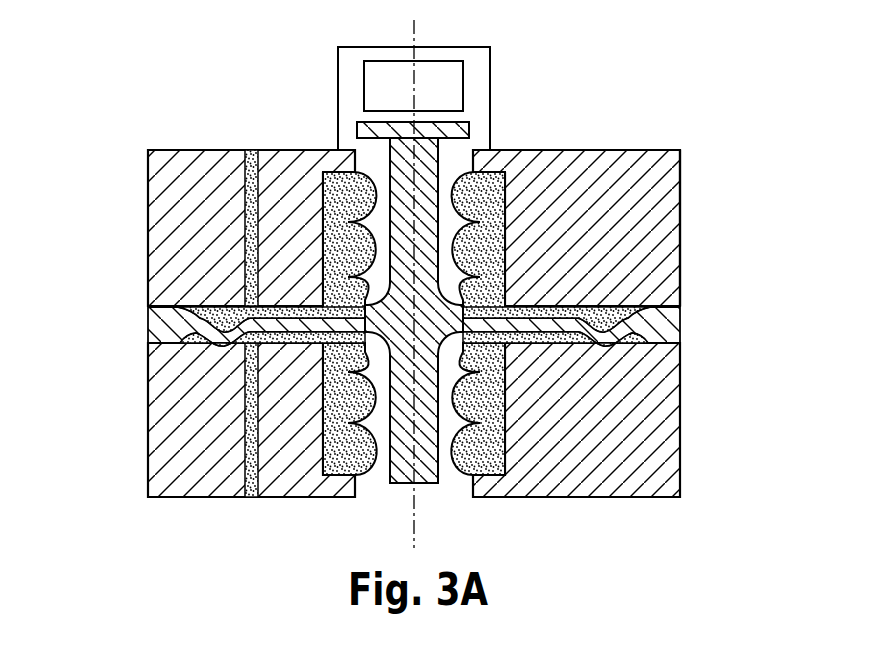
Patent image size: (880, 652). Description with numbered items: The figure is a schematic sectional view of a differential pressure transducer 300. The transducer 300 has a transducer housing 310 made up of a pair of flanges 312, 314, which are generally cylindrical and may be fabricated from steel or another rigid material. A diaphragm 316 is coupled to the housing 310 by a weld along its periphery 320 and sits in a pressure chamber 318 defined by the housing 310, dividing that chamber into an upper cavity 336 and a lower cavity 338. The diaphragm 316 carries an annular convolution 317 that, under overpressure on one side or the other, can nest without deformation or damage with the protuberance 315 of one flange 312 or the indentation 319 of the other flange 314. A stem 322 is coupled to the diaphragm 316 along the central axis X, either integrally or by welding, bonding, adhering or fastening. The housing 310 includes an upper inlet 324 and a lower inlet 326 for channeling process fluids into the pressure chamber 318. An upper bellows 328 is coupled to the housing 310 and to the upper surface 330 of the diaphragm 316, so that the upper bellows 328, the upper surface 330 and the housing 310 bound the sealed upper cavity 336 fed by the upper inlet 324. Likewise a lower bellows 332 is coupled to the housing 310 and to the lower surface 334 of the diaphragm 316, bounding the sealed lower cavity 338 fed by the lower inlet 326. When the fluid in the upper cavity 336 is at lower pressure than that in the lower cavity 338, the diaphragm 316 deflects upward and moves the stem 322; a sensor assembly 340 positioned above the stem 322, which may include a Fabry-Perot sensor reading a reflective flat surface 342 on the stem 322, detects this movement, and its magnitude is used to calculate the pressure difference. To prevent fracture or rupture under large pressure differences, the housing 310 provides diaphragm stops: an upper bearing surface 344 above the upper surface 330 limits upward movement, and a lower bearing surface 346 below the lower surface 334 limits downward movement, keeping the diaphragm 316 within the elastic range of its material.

The differential pressure transducer 300 is at (415, 287).
The transducer housing 310 is at (620, 172).
The flange 312 is at (680, 196).
The flange 314 is at (680, 457).
The protuberance 315 is at (233, 306).
The diaphragm 316 is at (165, 330).
The annular convolution 317 is at (205, 318).
The pressure chamber 318 is at (240, 345).
The indentation 319 is at (250, 342).
The periphery 320 is at (195, 318).
The stem 322 is at (427, 188).
The upper inlet 324 is at (252, 150).
The lower inlet 326 is at (245, 497).
The upper bellows 328 is at (490, 200).
The upper surface 330 is at (318, 306).
The lower bellows 332 is at (505, 440).
The lower surface 334 is at (290, 350).
The upper cavity 336 is at (227, 330).
The lower cavity 338 is at (560, 340).
The sensor assembly 340 is at (448, 83).
The flat surface 342 is at (465, 118).
The upper bearing surface 344 is at (560, 307).
The lower bearing surface 346 is at (573, 340).